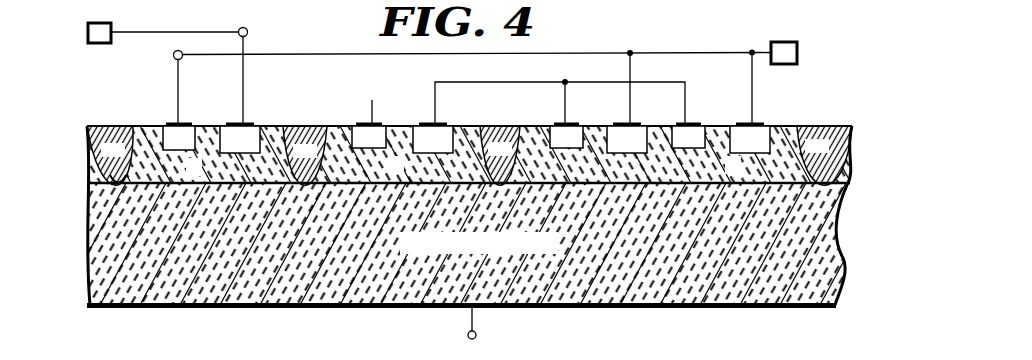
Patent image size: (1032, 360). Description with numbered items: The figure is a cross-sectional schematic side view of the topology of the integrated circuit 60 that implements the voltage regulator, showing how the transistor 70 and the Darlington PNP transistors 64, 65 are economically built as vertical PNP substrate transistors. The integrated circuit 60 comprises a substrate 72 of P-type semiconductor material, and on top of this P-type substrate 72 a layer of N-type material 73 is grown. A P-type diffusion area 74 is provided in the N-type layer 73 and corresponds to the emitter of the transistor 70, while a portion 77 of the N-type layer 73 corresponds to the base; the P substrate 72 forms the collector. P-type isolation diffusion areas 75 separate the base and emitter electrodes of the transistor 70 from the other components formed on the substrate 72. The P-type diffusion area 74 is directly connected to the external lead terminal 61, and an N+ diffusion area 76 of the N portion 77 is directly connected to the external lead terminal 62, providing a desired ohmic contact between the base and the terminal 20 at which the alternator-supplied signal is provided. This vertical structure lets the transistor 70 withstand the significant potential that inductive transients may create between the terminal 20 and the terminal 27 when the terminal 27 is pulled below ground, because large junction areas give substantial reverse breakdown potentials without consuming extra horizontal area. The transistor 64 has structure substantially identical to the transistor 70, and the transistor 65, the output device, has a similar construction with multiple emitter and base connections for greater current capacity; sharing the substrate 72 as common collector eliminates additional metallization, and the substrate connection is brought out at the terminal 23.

The terminal 20 is at (798, 52).
The substrate terminal 23 is at (468, 335).
The terminal 27 is at (99, 45).
The integrated circuit 60 is at (353, 46).
The external lead terminal 61 is at (248, 33).
The external lead terminal 62 is at (173, 56).
The Darlington PNP transistor 64 is at (410, 93).
The Darlington PNP transistor 65 is at (780, 105).
The transistor 70 is at (261, 125).
The substrate 72 is at (220, 272).
The N-type layer 73 is at (628, 165).
The P-type diffusion area 74 is at (228, 124).
The P-type isolation diffusion area 75 is at (121, 126).
The N+ diffusion area 76 is at (164, 124).
The portion of the N-type layer 77 is at (145, 185).